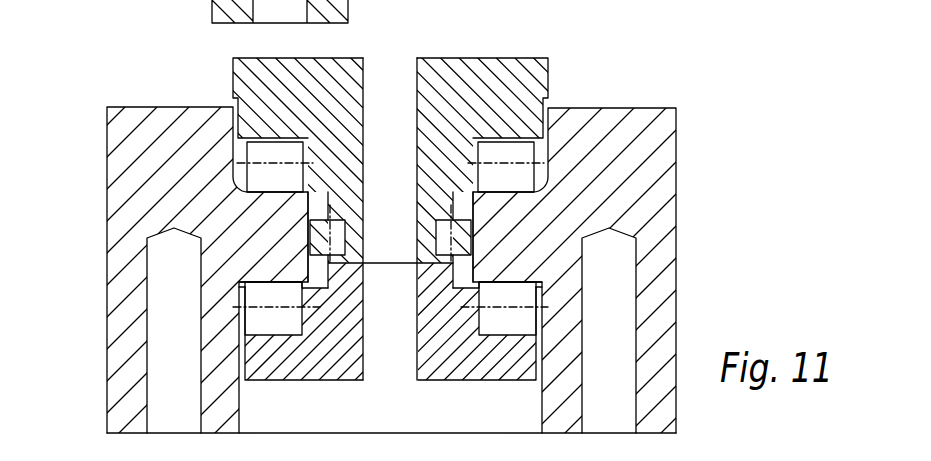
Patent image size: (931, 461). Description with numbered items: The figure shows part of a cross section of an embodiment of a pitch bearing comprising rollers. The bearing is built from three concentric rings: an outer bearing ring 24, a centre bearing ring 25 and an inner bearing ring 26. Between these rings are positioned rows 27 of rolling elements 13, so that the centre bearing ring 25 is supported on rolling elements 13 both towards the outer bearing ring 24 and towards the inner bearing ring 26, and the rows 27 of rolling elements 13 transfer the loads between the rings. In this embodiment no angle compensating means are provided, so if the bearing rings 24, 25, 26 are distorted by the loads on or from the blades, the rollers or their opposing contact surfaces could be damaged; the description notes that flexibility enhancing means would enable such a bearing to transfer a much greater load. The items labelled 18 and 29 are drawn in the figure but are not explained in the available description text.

The rolling elements 13 is at (255, 176).
The slot 18 is at (400, 150).
The outer bearing ring 24 is at (637, 190).
The centre bearing ring 25 is at (462, 94).
The inner bearing ring 26 is at (143, 198).
The rows 27 is at (308, 238).
The wall 29 is at (277, 223).